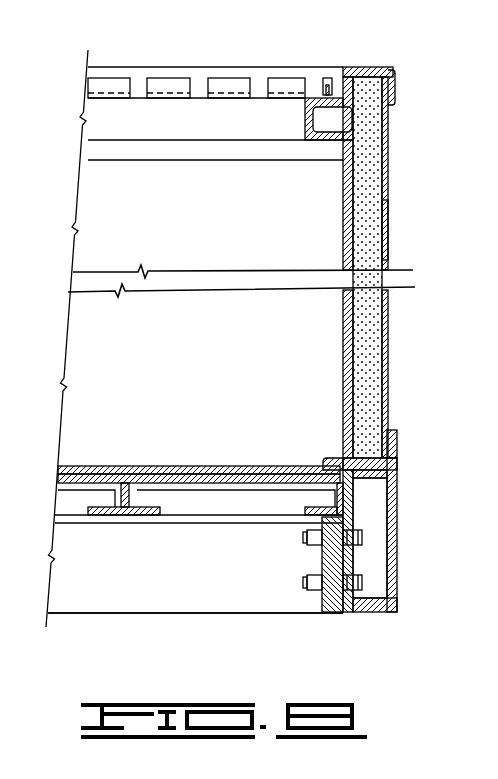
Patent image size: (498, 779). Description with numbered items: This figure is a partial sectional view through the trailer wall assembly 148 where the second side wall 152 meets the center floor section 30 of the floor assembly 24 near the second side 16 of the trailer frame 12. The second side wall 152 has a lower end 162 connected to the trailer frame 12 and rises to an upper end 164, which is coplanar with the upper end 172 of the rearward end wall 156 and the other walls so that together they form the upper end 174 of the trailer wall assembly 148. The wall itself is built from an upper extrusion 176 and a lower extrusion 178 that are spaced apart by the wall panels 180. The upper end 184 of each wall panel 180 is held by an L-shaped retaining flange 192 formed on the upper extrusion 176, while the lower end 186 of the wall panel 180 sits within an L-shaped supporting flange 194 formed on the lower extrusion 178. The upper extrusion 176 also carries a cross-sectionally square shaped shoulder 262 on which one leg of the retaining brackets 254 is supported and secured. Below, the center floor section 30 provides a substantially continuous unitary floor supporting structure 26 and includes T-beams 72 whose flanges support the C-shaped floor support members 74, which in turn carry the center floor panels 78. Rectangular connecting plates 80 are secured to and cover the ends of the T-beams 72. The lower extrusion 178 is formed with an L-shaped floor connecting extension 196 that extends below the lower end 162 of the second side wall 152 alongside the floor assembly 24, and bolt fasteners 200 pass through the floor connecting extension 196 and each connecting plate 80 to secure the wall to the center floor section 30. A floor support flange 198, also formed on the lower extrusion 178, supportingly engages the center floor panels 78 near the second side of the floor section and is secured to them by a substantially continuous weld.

The upper end of rearward end wall 172 is at (115, 65).
The upper end of trailer wall assembly 174 is at (173, 67).
The retaining brackets 254 is at (235, 78).
The upper end of wall panel 184 is at (366, 75).
The upper extrusion 176 is at (355, 68).
The upper end of second side wall 164 is at (386, 68).
The L-shaped retaining flange 192 is at (395, 84).
The trailer wall assembly 148 is at (392, 143).
The second side wall 152 is at (392, 200).
The rearward end wall 156 is at (115, 203).
The square shaped shoulder 262 is at (312, 122).
The wall panels 180 is at (390, 318).
The lower extrusion 178 is at (345, 407).
The floor support flange 198 is at (325, 457).
The L-shaped supporting flange 194 is at (398, 440).
The lower end of second side wall 162 is at (397, 461).
The lower end of wall panel 186 is at (393, 477).
The L-shaped floor connecting extension 196 is at (355, 509).
The trailer frame 12 is at (398, 576).
The second side of trailer frame 16 is at (398, 592).
The floor supporting structure 26 is at (118, 465).
The center floor panels 78 is at (196, 470).
The floor assembly 24 is at (83, 467).
The C-shaped floor support members 74 is at (80, 487).
The center floor section 30 is at (96, 543).
The T-beams 72 is at (112, 617).
The connecting plates 80 is at (330, 555).
The bolt fasteners 200 is at (305, 538).